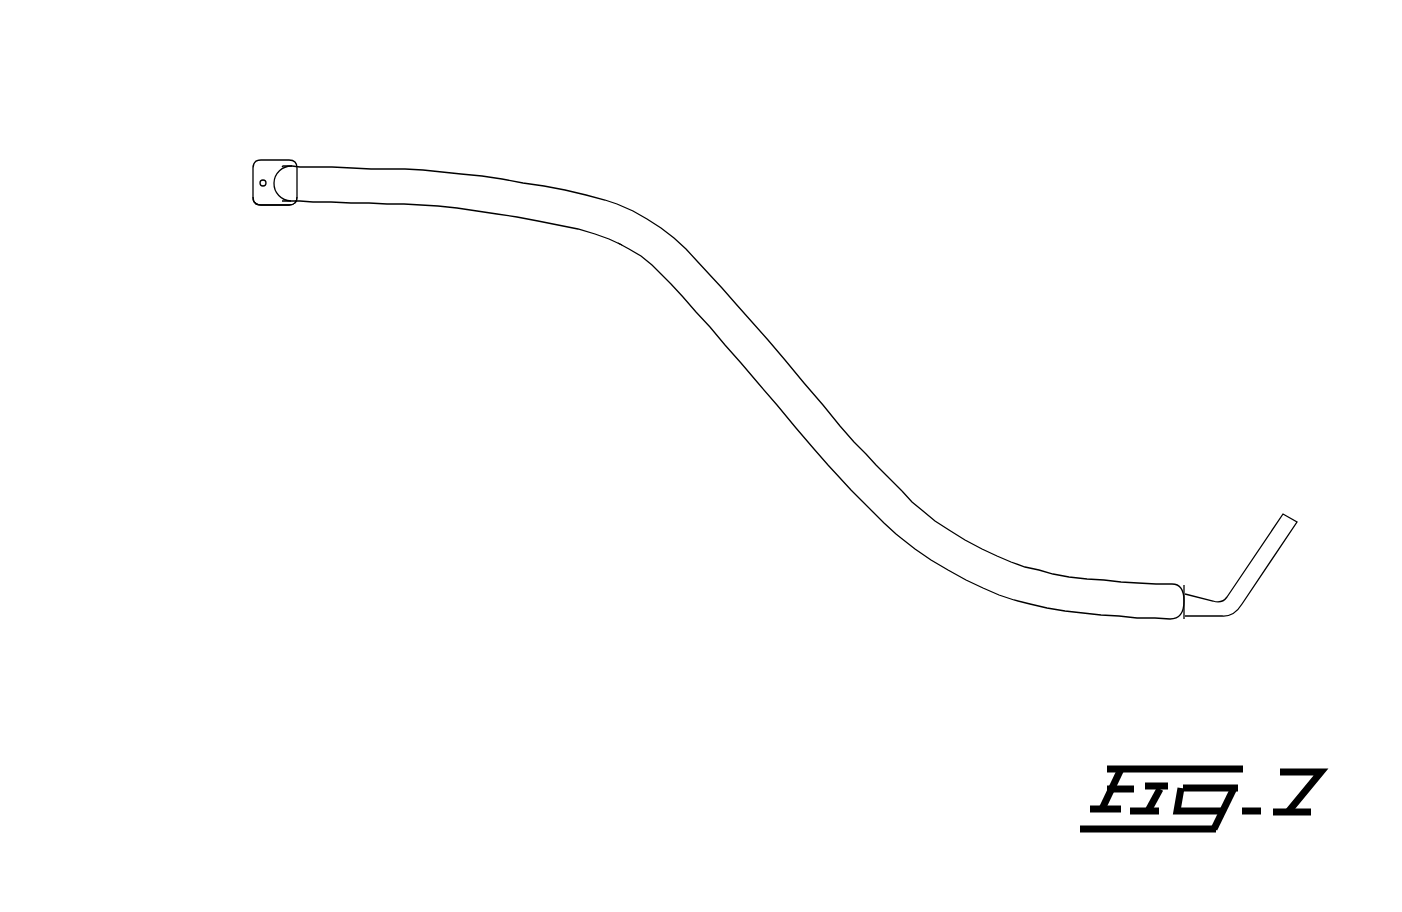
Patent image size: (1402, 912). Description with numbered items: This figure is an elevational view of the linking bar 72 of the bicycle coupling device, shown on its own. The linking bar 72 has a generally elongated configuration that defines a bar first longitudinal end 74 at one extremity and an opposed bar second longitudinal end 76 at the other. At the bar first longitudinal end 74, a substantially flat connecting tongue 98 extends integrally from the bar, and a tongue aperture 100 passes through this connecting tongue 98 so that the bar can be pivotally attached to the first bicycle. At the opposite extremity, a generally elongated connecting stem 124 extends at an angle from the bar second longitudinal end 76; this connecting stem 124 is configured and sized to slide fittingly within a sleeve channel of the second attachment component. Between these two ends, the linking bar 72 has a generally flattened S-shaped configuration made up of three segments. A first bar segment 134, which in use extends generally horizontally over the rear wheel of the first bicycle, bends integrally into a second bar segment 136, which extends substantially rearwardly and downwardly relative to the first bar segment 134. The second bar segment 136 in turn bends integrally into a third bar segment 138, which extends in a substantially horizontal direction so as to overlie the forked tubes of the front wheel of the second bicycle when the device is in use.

The linking bar 72 is at (729, 353).
The bar first longitudinal end 74 is at (181, 188).
The bar second longitudinal end 76 is at (1270, 533).
The connecting tongue 98 is at (277, 205).
The tongue aperture 100 is at (253, 178).
The connecting stem 124 is at (1268, 556).
The first bar segment 134 is at (443, 165).
The second bar segment 136 is at (712, 348).
The third bar segment 138 is at (912, 577).